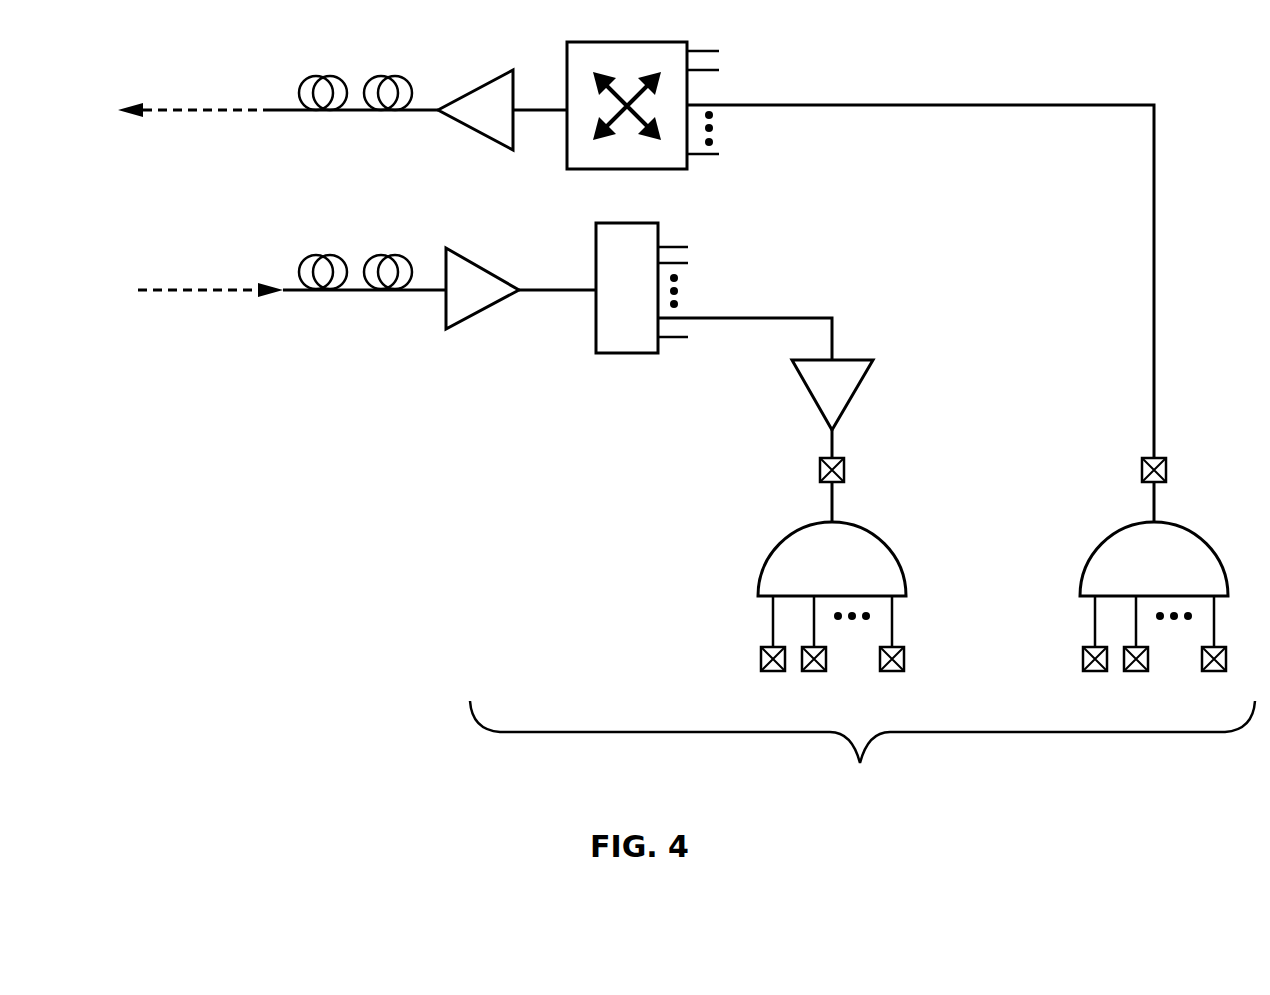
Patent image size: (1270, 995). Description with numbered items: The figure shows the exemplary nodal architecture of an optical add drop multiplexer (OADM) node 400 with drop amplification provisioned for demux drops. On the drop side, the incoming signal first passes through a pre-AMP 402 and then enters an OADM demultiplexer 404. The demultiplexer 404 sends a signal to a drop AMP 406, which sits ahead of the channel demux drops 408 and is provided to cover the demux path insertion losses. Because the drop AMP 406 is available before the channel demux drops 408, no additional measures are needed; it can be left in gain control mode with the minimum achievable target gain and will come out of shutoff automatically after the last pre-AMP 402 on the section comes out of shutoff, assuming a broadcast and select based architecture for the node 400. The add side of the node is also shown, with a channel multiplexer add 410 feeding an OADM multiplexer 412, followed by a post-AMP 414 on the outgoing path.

The optical add drop multiplexer node 400 is at (862, 747).
The pre-AMP 402 is at (477, 262).
The OADM demultiplexer 404 is at (630, 223).
The drop AMP 406 is at (853, 397).
The channel demux drops 408 is at (878, 533).
The channel multiplexer add 410 is at (1200, 533).
The OADM multiplexer 412 is at (632, 42).
The post-AMP 414 is at (493, 75).